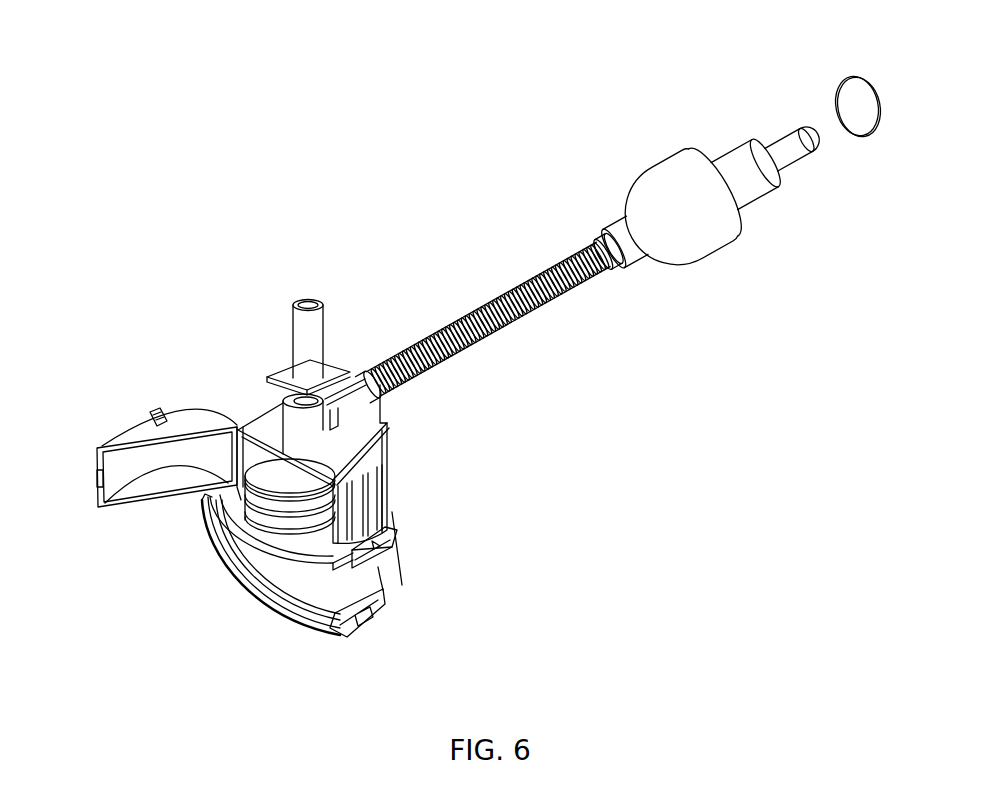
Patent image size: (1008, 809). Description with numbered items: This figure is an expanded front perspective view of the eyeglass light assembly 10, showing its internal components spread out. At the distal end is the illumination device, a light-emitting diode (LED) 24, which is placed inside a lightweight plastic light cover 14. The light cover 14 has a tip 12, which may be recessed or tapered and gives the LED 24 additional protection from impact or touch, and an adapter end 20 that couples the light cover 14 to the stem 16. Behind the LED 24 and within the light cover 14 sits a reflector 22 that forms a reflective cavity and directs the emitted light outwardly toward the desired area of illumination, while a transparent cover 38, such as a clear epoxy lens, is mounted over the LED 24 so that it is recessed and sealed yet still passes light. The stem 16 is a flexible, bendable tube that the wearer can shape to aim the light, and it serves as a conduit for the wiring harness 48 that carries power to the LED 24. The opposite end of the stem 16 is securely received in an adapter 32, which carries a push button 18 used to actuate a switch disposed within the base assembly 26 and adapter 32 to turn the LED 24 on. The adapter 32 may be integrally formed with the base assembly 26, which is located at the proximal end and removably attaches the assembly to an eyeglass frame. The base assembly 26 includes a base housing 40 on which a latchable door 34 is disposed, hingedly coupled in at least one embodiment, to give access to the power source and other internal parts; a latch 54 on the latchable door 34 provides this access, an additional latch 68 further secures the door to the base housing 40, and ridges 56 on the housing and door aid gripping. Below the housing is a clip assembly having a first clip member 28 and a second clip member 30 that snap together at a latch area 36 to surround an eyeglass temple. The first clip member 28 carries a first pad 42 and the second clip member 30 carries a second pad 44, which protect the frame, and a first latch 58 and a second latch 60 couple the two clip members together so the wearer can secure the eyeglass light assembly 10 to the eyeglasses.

The eyeglass light assembly 10 is at (355, 108).
The tip 12 is at (688, 170).
The light cover 14 is at (655, 177).
The stem 16 is at (490, 300).
The push button 18 is at (298, 310).
The adapter end 20 is at (617, 228).
The reflector 22 is at (733, 146).
The light-emitting diode (LED) 24 is at (790, 132).
The base assembly 26 is at (193, 370).
The first clip member 28 is at (393, 536).
The second clip member 30 is at (205, 532).
The adapter 32 is at (376, 422).
The latchable door 34 is at (101, 443).
The latch area 36 is at (403, 606).
The transparent cover 38 is at (850, 84).
The base housing 40 is at (268, 420).
The first pad 42 is at (325, 565).
The second pad 44 is at (317, 620).
The wiring harness 48 is at (597, 247).
The latch 54 is at (152, 412).
The ridges 56 is at (389, 466).
The first latch 58 is at (380, 549).
The second latch 60 is at (358, 621).
The additional latch 68 is at (96, 478).